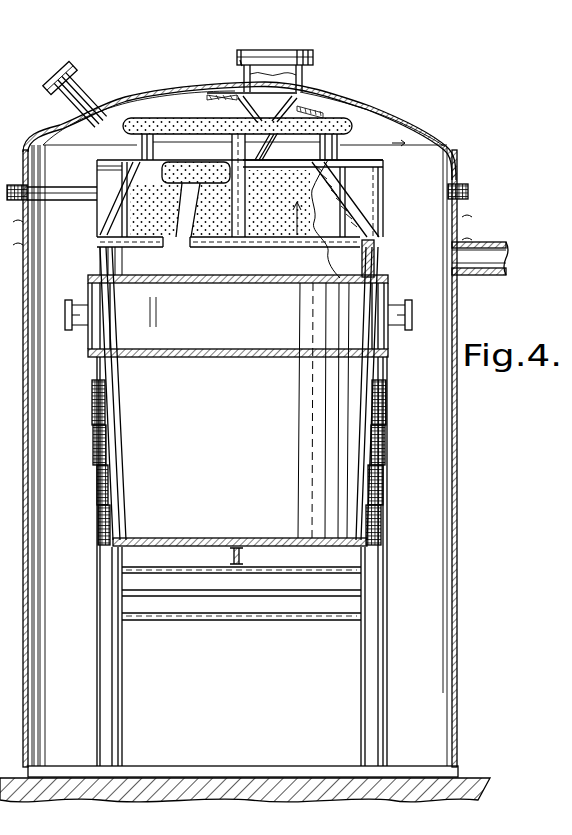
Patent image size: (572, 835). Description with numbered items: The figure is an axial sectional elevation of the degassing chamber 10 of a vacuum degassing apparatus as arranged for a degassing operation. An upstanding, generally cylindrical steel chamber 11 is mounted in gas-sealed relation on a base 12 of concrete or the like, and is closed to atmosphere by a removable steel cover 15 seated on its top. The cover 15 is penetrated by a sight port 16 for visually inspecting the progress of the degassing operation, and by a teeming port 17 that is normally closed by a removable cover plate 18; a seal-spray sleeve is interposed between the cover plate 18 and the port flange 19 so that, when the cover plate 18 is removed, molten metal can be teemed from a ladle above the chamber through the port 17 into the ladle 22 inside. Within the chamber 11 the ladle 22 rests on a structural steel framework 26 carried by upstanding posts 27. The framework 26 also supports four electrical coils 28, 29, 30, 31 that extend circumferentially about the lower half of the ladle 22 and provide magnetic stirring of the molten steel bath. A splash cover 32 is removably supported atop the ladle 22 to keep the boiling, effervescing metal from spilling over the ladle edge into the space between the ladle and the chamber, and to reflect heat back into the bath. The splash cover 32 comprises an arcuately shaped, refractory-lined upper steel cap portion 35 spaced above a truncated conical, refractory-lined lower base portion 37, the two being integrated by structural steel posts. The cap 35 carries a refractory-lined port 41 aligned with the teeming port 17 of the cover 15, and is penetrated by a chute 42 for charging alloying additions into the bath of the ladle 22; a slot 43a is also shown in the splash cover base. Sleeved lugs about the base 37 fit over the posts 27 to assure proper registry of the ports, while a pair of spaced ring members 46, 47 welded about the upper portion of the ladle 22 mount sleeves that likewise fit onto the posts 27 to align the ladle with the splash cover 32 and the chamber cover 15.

The degassing chamber 10 is at (494, 493).
The cylindrical steel chamber 11 is at (458, 642).
The base 12 is at (295, 786).
The removable cover 15 is at (405, 128).
The sight port 16 is at (88, 93).
The port 17 is at (315, 73).
The removable cover plate 18 is at (313, 53).
The port flange 19 is at (238, 62).
The ladle 22 is at (373, 258).
The structural steel framework 26 is at (222, 607).
The upstanding posts 27 is at (120, 691).
The electrical coil 28 is at (98, 526).
The electrical coil 29 is at (97, 487).
The electrical coil 30 is at (93, 433).
The electrical coil 31 is at (92, 402).
The splash cover 32 is at (201, 156).
The upper steel cap portion 35 is at (149, 118).
The lower base portion 37 is at (95, 222).
The refractory lined port 41 is at (200, 101).
The chute 42 is at (263, 142).
The slot 43a is at (182, 238).
The ring member 46 is at (389, 278).
The ring member 47 is at (389, 355).